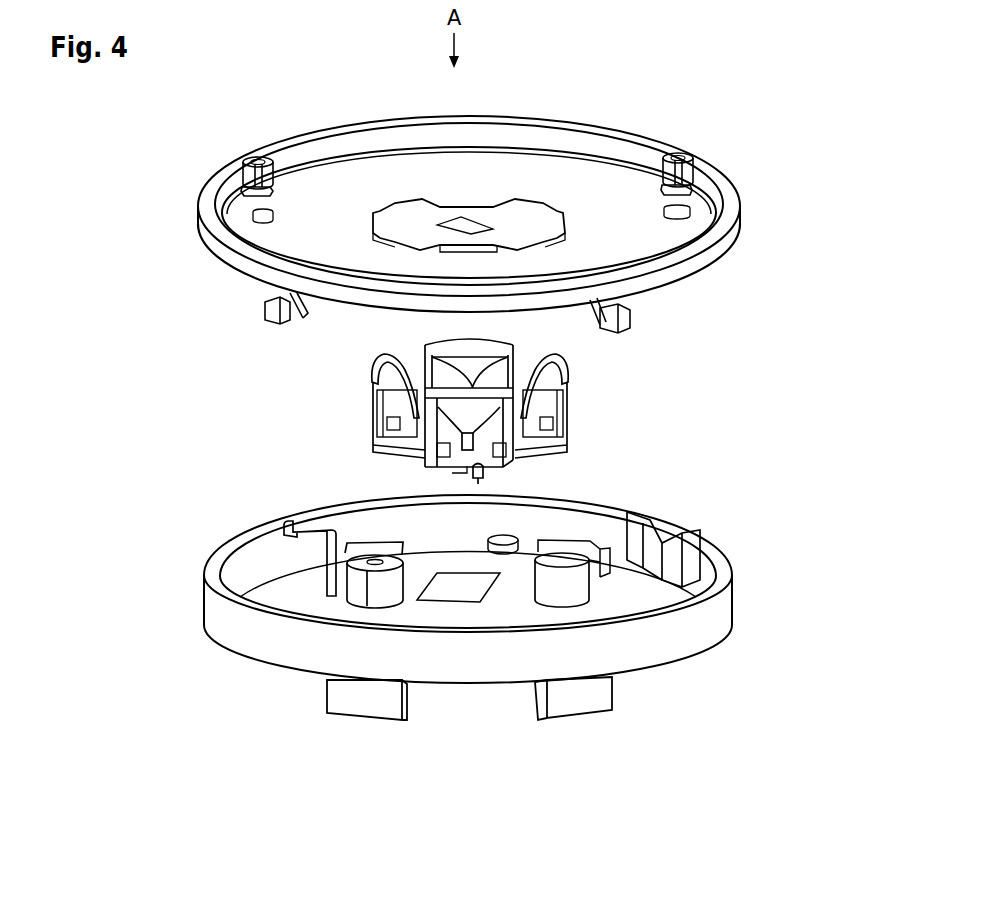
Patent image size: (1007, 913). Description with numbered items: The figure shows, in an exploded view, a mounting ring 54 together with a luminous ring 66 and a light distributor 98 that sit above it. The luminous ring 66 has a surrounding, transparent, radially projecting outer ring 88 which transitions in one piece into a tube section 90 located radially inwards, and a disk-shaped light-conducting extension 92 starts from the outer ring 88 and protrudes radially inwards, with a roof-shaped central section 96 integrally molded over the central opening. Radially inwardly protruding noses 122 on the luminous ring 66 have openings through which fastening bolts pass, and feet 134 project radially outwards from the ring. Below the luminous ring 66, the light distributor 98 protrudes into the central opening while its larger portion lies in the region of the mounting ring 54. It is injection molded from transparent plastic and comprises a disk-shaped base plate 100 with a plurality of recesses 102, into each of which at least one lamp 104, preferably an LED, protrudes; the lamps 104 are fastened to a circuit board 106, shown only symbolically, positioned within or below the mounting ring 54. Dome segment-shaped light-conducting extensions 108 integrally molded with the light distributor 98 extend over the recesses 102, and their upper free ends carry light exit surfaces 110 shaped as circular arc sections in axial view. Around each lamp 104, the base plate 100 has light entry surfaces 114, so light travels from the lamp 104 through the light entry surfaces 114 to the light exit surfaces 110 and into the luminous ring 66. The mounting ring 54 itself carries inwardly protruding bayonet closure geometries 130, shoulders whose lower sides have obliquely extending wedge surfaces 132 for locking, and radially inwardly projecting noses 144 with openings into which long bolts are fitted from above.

The mounting ring 54 is at (695, 621).
The luminous ring 66 is at (751, 202).
The outer ring 88 is at (687, 258).
The tube section 90 is at (237, 228).
The light-conducting extension 92 is at (309, 175).
The roof-shaped central section 96 is at (527, 213).
The light distributor 98 is at (477, 405).
The base plate 100 is at (557, 452).
The recess 102 is at (452, 473).
The lamp 104 is at (484, 473).
The circuit board 106 is at (458, 586).
The light-conducting extension 108 is at (474, 357).
The light exit surface 110 is at (374, 370).
The light entry surface 114 is at (376, 455).
The nose 122 is at (262, 158).
The bayonet closure geometry 130 is at (651, 532).
The wedge surface 132 is at (313, 575).
The foot 134 is at (631, 321).
The nose 144 is at (353, 582).